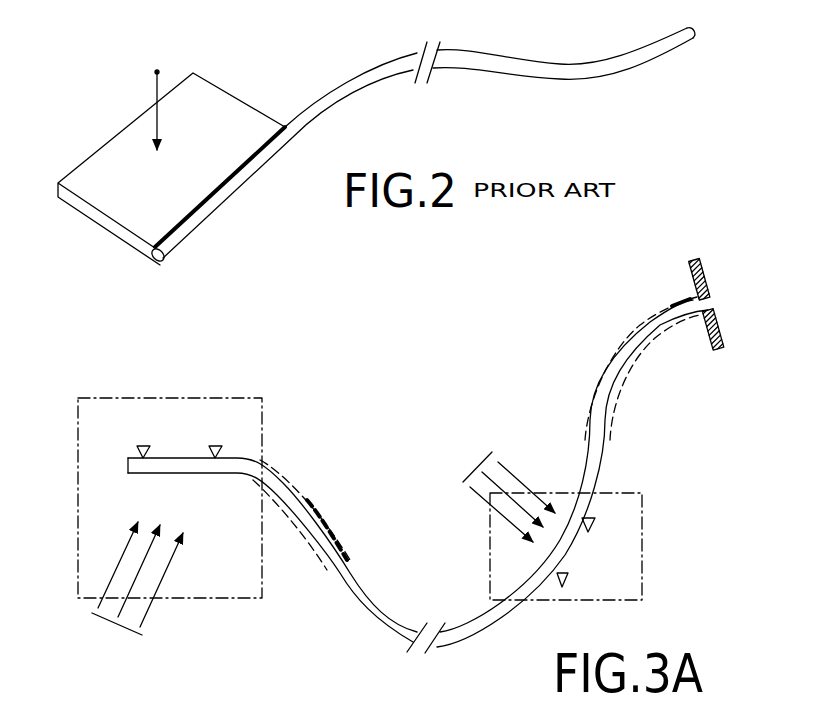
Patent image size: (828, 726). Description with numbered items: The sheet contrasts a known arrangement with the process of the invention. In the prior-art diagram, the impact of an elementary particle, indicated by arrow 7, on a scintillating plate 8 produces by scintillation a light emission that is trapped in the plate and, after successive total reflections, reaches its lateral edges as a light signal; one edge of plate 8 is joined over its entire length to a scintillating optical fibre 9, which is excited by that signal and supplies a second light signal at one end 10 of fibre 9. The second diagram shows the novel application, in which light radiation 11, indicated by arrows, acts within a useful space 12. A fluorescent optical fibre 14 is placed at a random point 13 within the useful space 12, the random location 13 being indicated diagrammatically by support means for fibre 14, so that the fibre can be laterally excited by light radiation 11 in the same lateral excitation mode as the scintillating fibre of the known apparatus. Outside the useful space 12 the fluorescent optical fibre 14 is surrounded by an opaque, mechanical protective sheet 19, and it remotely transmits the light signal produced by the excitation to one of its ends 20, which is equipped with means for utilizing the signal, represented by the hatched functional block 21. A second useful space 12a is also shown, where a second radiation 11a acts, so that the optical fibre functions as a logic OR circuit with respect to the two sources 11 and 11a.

In FIG. 2, the arrow indicating impact of an elementary particle 7 is at (142, 110).
In FIG. 2, the scintillating plate 8 is at (240, 113).
In FIG. 2, the scintillating optical fibre 9 is at (342, 82).
In FIG. 2, the end of fibre 10 is at (702, 35).
In FIG. 3A, the light radiation 11 is at (107, 622).
In FIG. 3A, the second radiation 11a is at (473, 467).
In FIG. 3A, the useful space 12 is at (258, 598).
In FIG. 3A, the second useful space 12a is at (627, 493).
In FIG. 3A, the random point 13 is at (215, 447).
In FIG. 3A, the fluorescent optical fibre 14 is at (250, 463).
In FIG. 3A, the opaque mechanical protective sheet 19 is at (317, 508).
In FIG. 3A, the end of fluorescent fibre 20 is at (712, 296).
In FIG. 3A, the functional block 21 is at (705, 337).